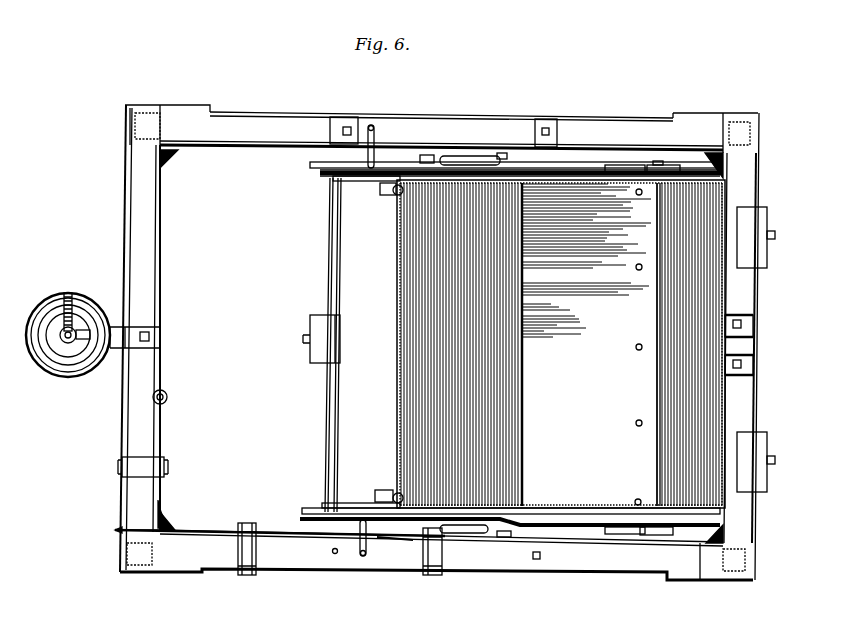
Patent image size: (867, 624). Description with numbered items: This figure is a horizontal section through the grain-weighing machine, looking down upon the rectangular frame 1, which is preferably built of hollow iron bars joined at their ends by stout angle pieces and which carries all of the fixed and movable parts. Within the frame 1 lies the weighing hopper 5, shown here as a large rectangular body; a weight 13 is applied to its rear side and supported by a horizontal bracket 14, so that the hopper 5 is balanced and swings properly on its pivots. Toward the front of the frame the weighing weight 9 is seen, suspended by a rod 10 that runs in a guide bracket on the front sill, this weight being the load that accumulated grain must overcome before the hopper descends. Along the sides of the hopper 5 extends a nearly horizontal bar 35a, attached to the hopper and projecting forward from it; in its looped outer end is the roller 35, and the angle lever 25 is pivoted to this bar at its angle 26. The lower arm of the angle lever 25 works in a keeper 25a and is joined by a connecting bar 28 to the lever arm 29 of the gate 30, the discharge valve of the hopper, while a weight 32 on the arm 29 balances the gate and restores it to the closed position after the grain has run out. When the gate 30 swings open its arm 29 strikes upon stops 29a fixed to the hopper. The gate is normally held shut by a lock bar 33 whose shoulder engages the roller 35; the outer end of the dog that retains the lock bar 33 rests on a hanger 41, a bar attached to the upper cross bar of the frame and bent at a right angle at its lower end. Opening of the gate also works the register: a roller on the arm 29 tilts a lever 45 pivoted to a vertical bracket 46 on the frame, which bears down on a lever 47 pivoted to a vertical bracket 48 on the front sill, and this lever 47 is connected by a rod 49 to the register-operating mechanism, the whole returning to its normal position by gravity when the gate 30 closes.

The rectangular frame 1 is at (477, 116).
The weighing hopper 5 is at (544, 344).
The weighing weight 9 is at (93, 348).
The rod 10 is at (72, 330).
The weight 13 is at (760, 230).
The horizontal bracket 14 is at (755, 352).
The angle lever 25 is at (623, 166).
The keeper 25a is at (498, 157).
The pivot 26 is at (661, 167).
The connecting bar 28 is at (445, 536).
The lever arm 29 is at (338, 382).
The stops 29a is at (380, 493).
The gate 30 is at (631, 344).
The weight 32 is at (340, 322).
The lock bar 33 is at (333, 180).
The roller 35 is at (318, 174).
The bar 35a is at (300, 520).
The hanger 41 is at (371, 126).
The lever 45 is at (113, 531).
The vertical bracket 46 is at (256, 549).
The lever 47 is at (160, 514).
The vertical bracket 48 is at (166, 468).
The rod 49 is at (168, 397).